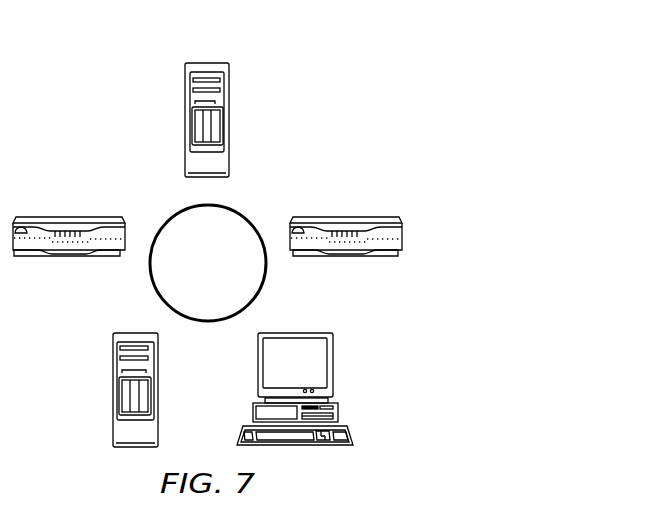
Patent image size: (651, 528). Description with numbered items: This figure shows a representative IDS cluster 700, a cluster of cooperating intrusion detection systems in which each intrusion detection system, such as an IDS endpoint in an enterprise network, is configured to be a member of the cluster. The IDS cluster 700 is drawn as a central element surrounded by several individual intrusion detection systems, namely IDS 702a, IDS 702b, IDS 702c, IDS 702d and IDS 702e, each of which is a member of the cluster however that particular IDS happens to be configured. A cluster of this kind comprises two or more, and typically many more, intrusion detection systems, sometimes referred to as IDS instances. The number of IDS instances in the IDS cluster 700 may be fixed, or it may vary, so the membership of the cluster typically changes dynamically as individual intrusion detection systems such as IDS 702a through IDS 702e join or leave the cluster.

The IDS cluster 700 is at (190, 306).
The IDS 702a is at (68, 217).
The IDS 702b is at (207, 63).
The IDS 702c is at (347, 217).
The IDS 702d is at (332, 363).
The IDS 702e is at (112, 390).